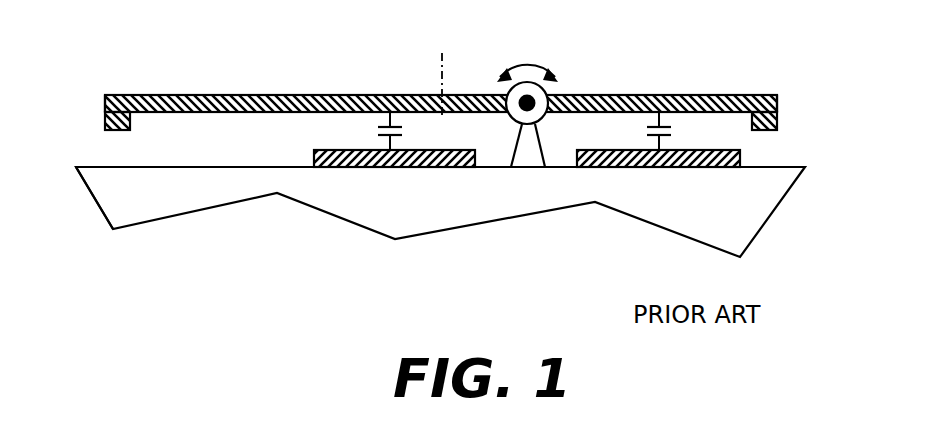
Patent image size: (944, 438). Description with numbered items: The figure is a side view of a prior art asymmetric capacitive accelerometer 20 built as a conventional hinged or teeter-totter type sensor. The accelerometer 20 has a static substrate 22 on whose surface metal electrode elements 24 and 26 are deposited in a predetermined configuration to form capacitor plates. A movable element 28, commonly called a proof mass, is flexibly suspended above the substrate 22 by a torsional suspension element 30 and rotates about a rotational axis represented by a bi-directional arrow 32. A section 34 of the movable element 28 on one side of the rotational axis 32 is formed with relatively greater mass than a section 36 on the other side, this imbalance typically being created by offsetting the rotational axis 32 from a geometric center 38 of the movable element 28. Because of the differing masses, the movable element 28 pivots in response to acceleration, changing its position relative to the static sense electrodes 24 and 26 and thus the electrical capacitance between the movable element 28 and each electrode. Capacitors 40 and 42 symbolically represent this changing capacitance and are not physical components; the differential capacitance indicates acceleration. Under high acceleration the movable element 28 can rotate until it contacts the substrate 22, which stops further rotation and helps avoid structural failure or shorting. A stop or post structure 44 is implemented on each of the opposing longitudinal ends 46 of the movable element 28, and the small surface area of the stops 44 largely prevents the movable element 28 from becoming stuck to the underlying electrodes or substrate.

The capacitive accelerometer 20 is at (194, 282).
The static substrate 22 is at (115, 212).
The metal electrode element 24 is at (313, 166).
The metal electrode element 26 is at (740, 153).
The movable element 28 is at (173, 95).
The torsional suspension element 30 is at (532, 108).
The rotational axis 32 is at (538, 67).
The section of movable element 34 is at (220, 95).
The section of movable element 36 is at (685, 95).
The geometric center 38 is at (444, 80).
The capacitor 40 is at (371, 131).
The capacitor 42 is at (643, 131).
The stop or post structure 44 is at (106, 128).
The longitudinal ends 46 is at (103, 110).